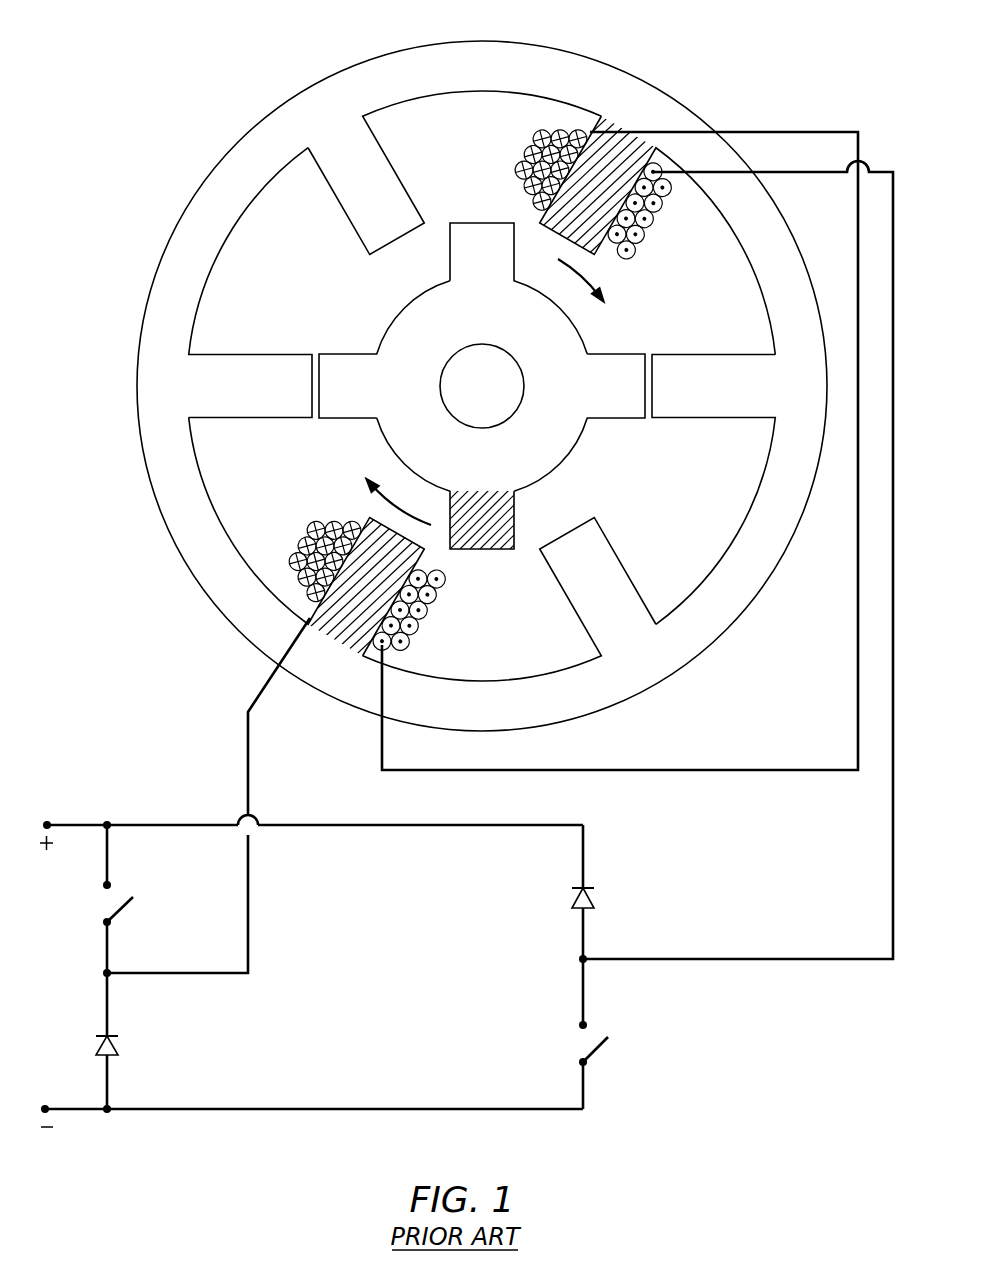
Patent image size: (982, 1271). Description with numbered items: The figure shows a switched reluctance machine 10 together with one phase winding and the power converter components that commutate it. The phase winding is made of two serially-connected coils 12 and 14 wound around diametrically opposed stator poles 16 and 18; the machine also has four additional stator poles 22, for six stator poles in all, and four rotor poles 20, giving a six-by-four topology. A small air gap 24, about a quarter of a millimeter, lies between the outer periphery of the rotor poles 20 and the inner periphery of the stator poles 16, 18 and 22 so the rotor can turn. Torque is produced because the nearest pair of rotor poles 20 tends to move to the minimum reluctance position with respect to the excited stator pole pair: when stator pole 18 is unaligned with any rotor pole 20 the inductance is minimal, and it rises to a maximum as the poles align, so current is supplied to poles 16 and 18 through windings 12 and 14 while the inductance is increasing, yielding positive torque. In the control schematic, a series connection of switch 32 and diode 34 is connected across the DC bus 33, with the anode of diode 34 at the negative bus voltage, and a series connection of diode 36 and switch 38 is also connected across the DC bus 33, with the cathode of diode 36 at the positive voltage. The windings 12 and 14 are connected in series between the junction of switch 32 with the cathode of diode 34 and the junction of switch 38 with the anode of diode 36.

The switched reluctance machine 10 is at (707, 80).
The coil 12 is at (432, 604).
The coil 14 is at (660, 206).
The stator pole 16 is at (304, 672).
The stator pole 18 is at (627, 150).
The rotor pole 20 is at (450, 257).
The stator pole 22 is at (352, 220).
The air gap 24 is at (317, 356).
The switch 32 is at (120, 907).
The DC bus 33 is at (73, 822).
The diode 34 is at (115, 1047).
The diode 36 is at (592, 902).
The switch 38 is at (588, 1055).